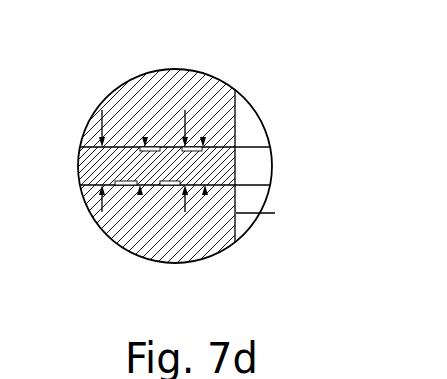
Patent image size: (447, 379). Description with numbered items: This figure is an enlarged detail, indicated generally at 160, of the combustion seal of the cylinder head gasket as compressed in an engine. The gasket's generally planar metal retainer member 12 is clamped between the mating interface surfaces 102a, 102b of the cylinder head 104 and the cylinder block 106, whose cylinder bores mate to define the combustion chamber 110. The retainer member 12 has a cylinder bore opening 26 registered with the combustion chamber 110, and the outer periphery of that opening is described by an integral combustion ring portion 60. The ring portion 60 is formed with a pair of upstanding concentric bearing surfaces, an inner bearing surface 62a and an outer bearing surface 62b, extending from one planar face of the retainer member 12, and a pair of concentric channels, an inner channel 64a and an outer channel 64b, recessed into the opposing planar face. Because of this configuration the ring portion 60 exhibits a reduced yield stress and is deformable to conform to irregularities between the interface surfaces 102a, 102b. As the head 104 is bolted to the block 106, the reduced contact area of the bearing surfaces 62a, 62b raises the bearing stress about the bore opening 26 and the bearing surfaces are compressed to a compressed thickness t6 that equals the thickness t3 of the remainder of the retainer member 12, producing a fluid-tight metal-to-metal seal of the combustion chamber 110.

The enlarged view of combustion seal 160 is at (180, 68).
The cylinder head 104 is at (110, 93).
The cylinder block 106 is at (112, 239).
The cylinder bore opening 26 is at (248, 166).
The combustion chamber 110 is at (255, 166).
The interface surface of cylinder head 102a is at (250, 147).
The interface surface of cylinder block 102b is at (250, 185).
The inner channel 64a is at (203, 138).
The outer channel 64b is at (145, 138).
The inner bearing surface 62a is at (205, 195).
The outer bearing surface 62b is at (139, 195).
The combustion ring portion 60 is at (222, 147).
The thickness of remainder of retainer member t3 is at (100, 124).
The compressed thickness t6 is at (185, 212).
The retainer member 12 is at (78, 160).